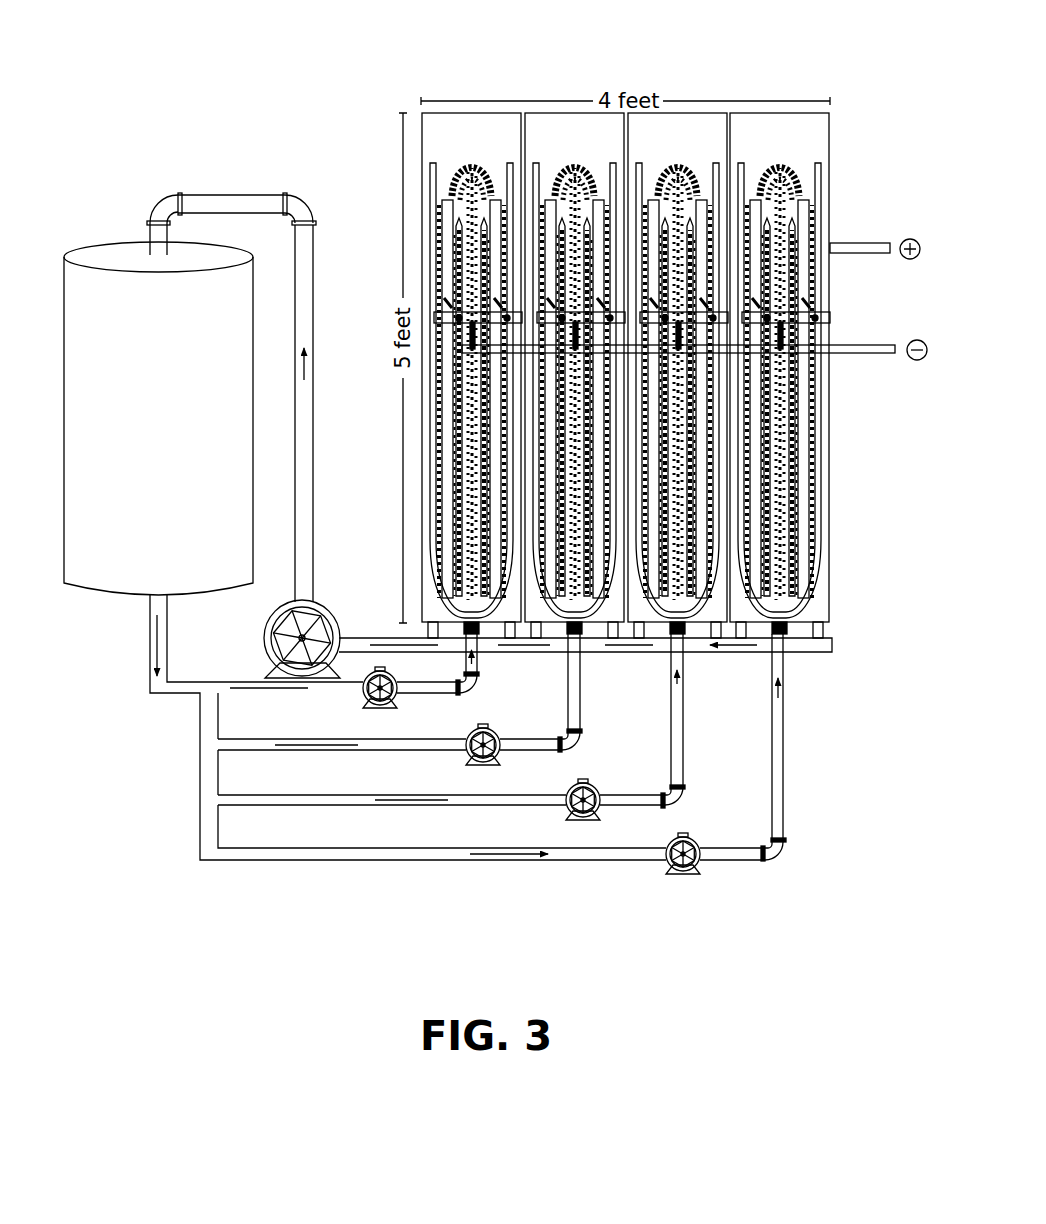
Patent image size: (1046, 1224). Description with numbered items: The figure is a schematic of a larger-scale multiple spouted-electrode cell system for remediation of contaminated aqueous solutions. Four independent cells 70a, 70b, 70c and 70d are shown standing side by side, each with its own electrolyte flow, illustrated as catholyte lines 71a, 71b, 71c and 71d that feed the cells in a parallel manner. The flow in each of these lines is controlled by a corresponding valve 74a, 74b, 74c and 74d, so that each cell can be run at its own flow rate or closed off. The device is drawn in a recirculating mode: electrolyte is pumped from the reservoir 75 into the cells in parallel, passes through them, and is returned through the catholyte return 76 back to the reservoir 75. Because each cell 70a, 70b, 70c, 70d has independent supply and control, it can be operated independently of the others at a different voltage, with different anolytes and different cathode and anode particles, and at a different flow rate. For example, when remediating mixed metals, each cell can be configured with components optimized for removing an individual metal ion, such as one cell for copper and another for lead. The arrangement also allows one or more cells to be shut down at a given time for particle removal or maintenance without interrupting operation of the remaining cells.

The cell 70a is at (781, 146).
The cell 70b is at (672, 142).
The cell 70c is at (568, 142).
The cell 70d is at (462, 142).
The catholyte line 71a is at (784, 800).
The catholyte line 71b is at (683, 765).
The catholyte line 71c is at (580, 718).
The catholyte line 71d is at (477, 680).
The valve 74a is at (683, 874).
The valve 74b is at (582, 820).
The valve 74c is at (480, 765).
The valve 74d is at (376, 708).
The reservoir 75 is at (117, 570).
The catholyte return 76 is at (383, 637).